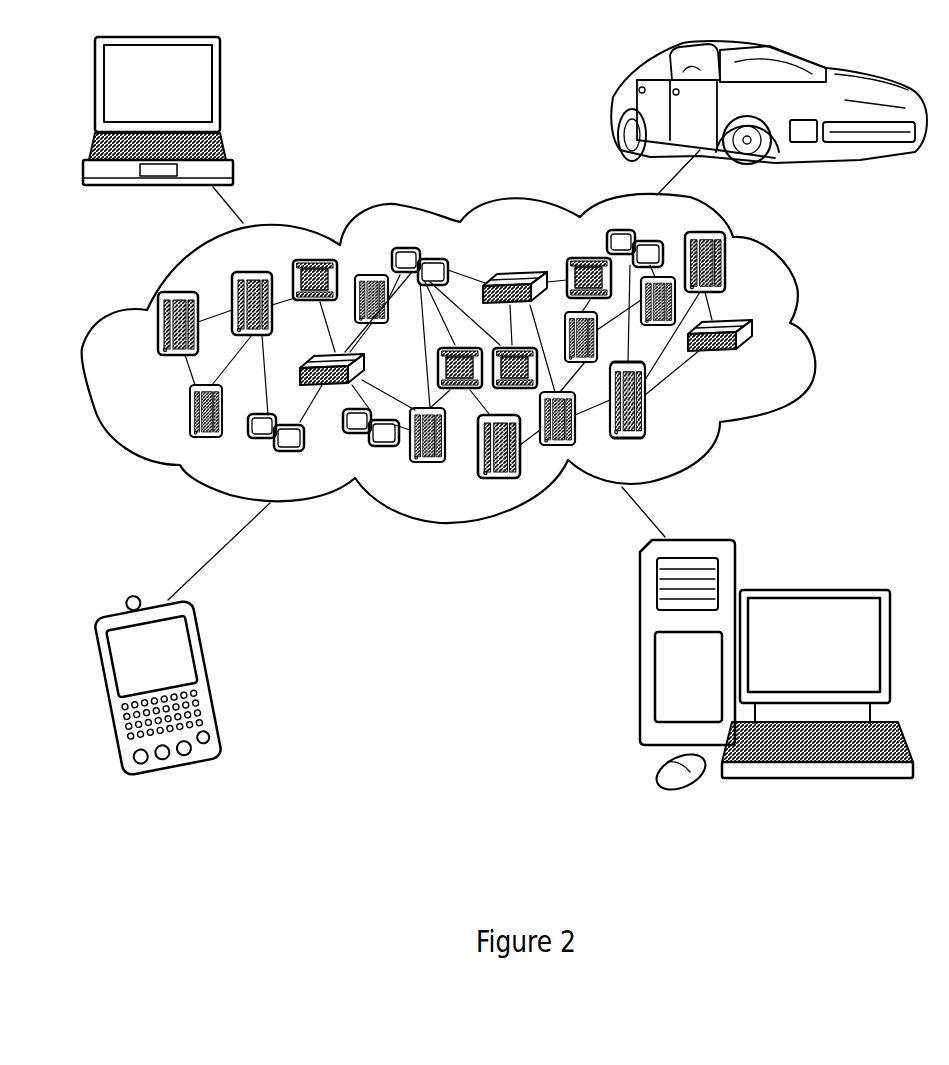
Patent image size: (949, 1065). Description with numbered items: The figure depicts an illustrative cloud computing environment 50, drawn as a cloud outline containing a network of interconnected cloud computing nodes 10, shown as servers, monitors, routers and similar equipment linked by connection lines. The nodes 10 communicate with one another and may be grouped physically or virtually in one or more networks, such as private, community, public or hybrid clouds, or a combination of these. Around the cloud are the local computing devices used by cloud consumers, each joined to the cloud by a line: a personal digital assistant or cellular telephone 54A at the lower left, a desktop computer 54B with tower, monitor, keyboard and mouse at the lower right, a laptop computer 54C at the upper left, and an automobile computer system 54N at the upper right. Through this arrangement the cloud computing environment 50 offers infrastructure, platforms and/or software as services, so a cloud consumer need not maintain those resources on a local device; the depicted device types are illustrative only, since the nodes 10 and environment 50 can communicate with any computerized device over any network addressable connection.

The cloud computing nodes 10 is at (766, 364).
The cloud computing environment 50 is at (812, 334).
The personal digital assistant (PDA) or cellular telephone 54A is at (212, 673).
The desktop computer 54B is at (810, 590).
The laptop computer 54C is at (223, 92).
The automobile computer system 54N is at (612, 108).